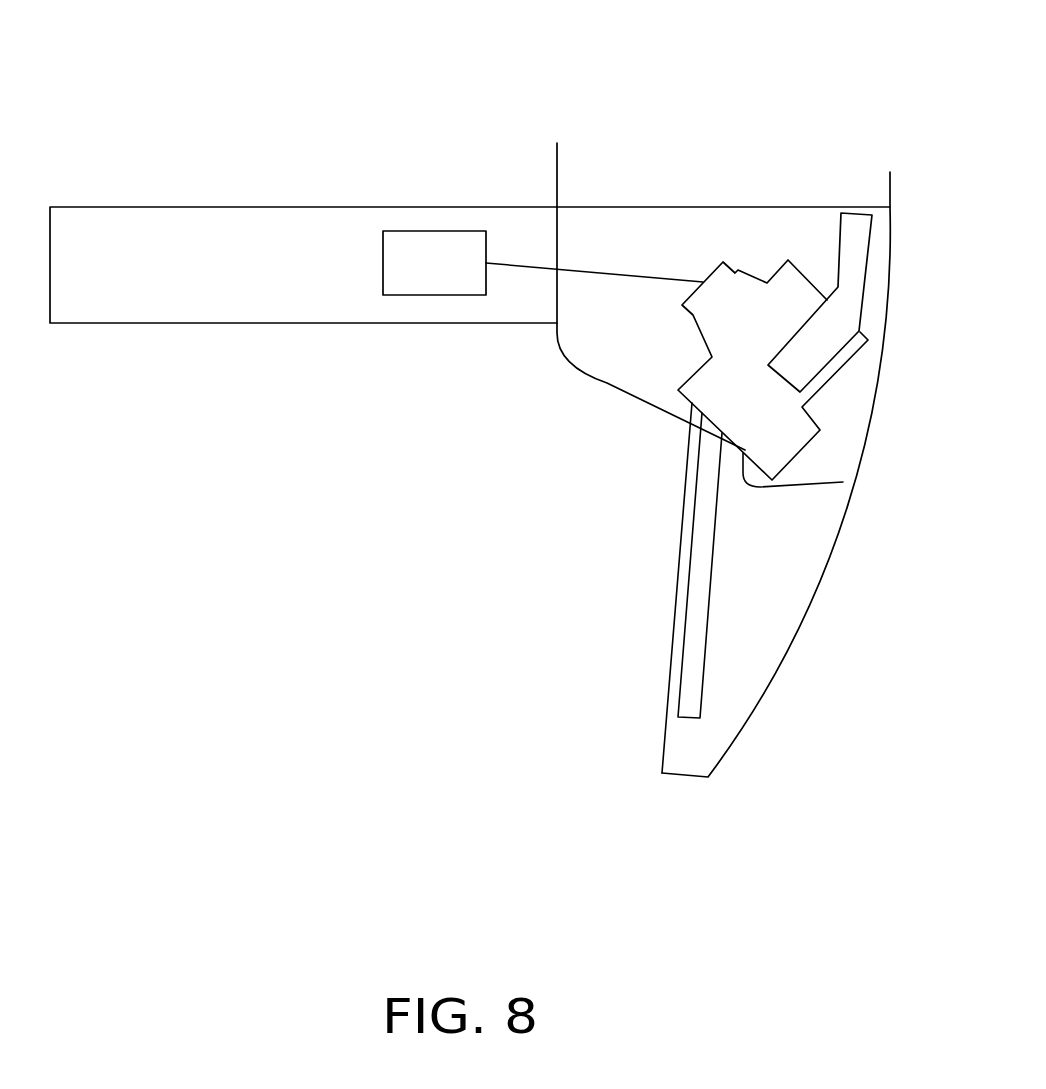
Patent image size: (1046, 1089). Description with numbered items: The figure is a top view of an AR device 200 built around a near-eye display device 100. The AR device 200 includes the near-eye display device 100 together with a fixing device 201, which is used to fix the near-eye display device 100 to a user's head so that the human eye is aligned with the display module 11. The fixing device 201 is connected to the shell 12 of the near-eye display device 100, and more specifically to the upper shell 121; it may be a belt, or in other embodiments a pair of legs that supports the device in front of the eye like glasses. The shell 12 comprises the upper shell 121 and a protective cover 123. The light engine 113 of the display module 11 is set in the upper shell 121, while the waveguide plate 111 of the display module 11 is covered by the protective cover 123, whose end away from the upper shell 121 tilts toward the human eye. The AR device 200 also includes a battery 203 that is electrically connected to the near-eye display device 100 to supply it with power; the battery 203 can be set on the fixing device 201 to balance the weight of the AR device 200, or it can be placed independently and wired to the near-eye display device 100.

The AR device 200 is at (468, 32).
The fixing device 201 is at (203, 285).
The battery 203 is at (425, 280).
The near-eye display device 100 is at (707, 160).
The display module 11 is at (930, 431).
The waveguide plate 111 is at (705, 535).
The light engine 113 is at (775, 425).
The shell 12 is at (583, 435).
The upper shell 121 is at (622, 392).
The protective cover 123 is at (683, 540).